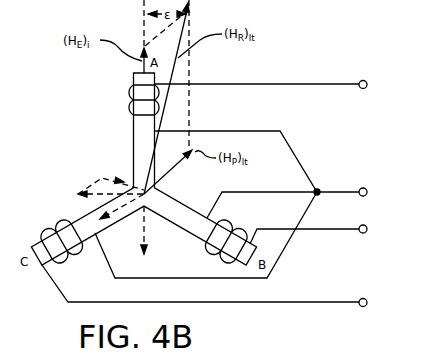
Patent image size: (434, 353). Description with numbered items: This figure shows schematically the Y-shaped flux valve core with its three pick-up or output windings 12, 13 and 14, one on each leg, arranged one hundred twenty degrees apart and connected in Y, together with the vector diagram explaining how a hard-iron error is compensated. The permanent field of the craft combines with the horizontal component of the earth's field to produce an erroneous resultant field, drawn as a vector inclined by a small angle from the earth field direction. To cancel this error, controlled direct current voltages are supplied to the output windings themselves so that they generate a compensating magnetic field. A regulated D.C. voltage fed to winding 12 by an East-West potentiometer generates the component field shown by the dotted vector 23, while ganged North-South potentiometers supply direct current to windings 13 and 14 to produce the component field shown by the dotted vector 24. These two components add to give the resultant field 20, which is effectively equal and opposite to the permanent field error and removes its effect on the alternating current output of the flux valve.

The pick-up or output winding 12 is at (132, 88).
The pick-up or output winding 13 is at (200, 238).
The pick-up or output winding 14 is at (62, 227).
The resultant compensating field component 20 is at (86, 252).
The component field vector 23 is at (138, 229).
The component field vector 24 is at (94, 181).